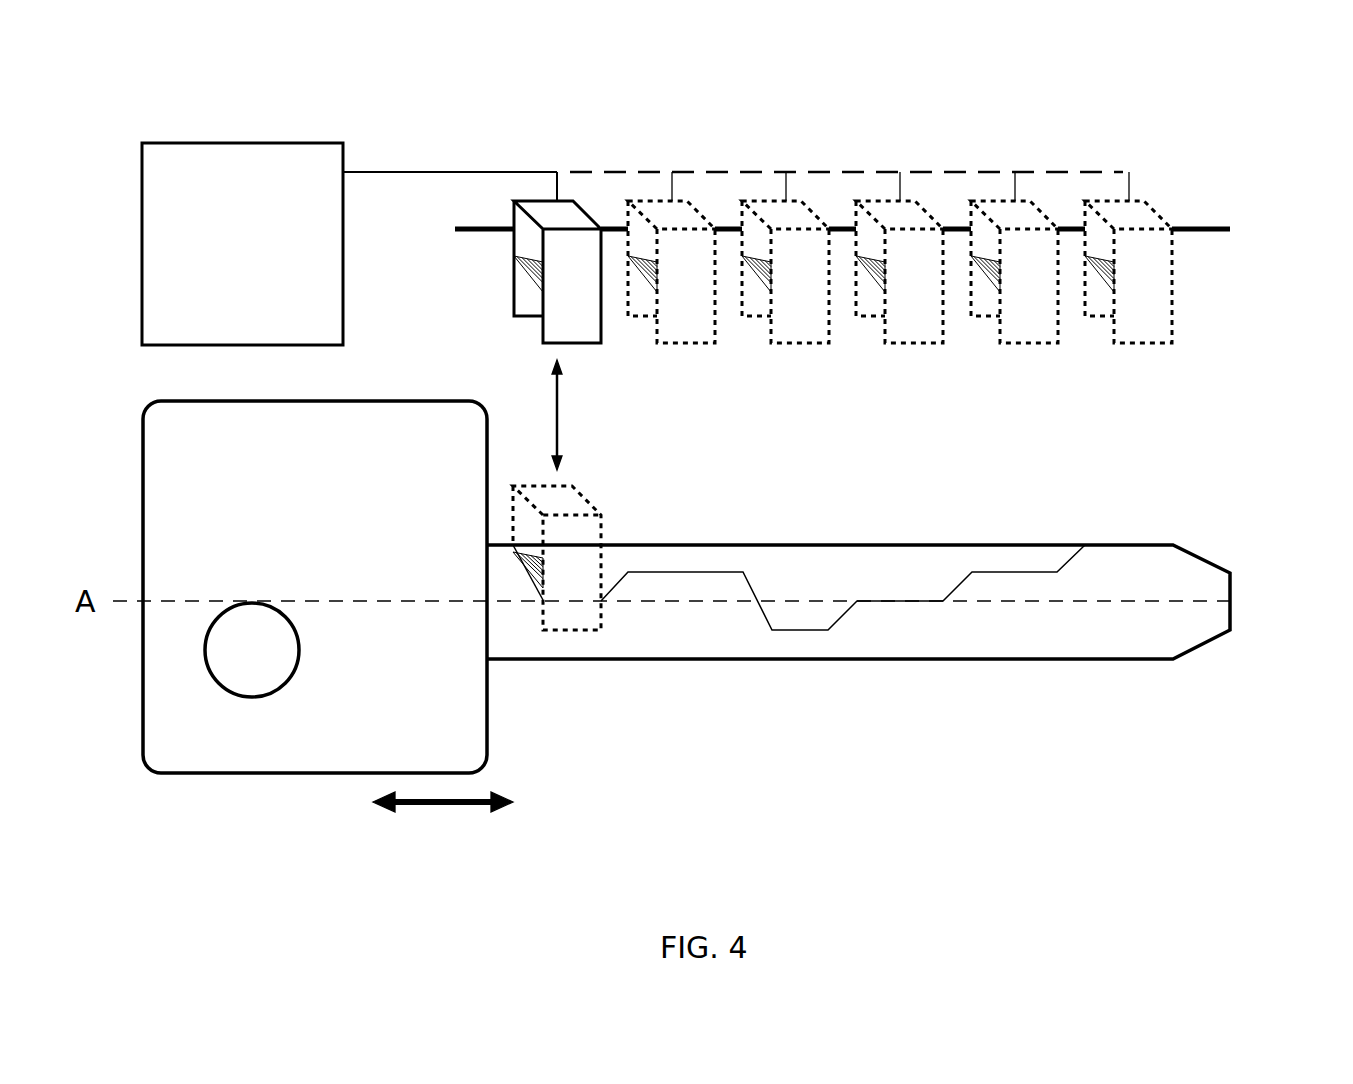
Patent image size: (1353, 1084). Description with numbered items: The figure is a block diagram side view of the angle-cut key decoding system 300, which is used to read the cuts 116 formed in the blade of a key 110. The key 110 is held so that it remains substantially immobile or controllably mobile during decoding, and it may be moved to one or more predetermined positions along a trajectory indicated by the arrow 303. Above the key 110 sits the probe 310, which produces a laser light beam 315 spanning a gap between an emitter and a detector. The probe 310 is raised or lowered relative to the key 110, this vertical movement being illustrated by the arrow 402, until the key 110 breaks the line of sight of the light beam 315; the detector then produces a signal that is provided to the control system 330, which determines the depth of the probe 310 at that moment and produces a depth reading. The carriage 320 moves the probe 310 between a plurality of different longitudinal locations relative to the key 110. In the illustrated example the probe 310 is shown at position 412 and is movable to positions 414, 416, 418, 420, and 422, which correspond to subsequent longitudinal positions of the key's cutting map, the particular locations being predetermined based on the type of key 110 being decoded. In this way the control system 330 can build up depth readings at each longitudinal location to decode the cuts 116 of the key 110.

The key decoding system 300 is at (222, 80).
The control system 330 is at (218, 302).
The probe 310 is at (494, 281).
The laser light beam 315 is at (465, 309).
The carriage 320 is at (1200, 232).
The position 412 is at (620, 192).
The position 414 is at (734, 192).
The position 416 is at (848, 192).
The position 418 is at (963, 192).
The position 420 is at (1077, 192).
The position 422 is at (1191, 192).
The arrow 402 is at (600, 398).
The key 110 is at (488, 733).
The cuts 116 is at (956, 638).
The arrow 303 is at (443, 807).